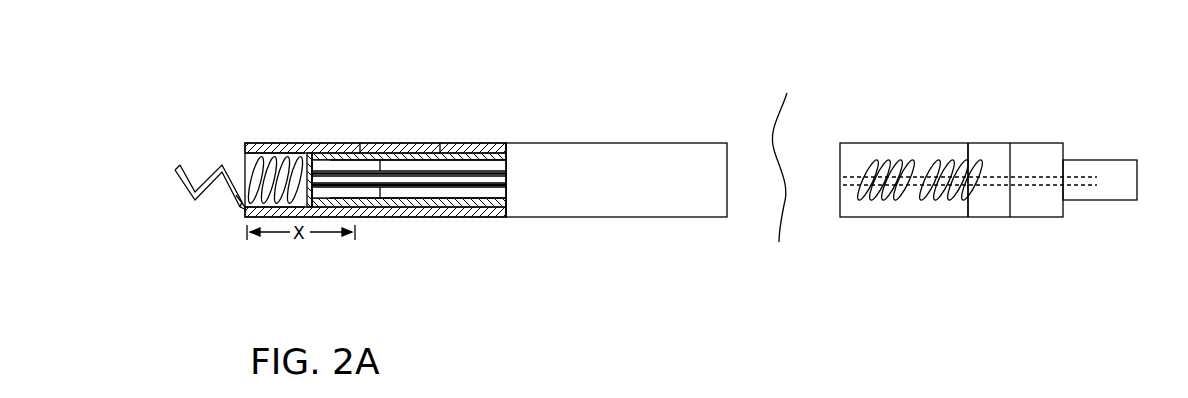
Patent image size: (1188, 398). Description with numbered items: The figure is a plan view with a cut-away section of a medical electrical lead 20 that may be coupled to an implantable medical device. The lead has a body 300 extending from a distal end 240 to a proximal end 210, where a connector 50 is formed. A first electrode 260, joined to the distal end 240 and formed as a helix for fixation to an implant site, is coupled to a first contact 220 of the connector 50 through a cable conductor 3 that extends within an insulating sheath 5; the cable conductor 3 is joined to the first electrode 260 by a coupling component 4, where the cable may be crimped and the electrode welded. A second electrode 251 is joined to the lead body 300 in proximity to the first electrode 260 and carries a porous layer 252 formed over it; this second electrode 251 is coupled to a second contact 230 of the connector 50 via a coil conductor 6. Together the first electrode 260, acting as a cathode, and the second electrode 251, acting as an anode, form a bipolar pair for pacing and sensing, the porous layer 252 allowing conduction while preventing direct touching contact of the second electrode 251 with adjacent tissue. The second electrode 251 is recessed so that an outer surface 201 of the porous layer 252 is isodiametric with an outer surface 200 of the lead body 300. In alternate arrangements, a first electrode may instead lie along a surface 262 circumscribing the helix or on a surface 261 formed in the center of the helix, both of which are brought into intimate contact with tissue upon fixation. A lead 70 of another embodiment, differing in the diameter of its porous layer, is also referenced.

The medical electrical lead 20 is at (598, 106).
The distal end 240 is at (217, 108).
The surface 261 is at (243, 203).
The first electrode 260 is at (200, 206).
The surface 262 is at (247, 213).
The coupling component 4 is at (298, 143).
The insulating sheath 5 is at (318, 143).
The cable conductor 3 is at (348, 143).
The porous layer 252 is at (370, 143).
The second electrode 251 is at (425, 143).
The body 300 is at (630, 190).
The outer surface 201 is at (395, 218).
The coil conductor 6 is at (464, 218).
The outer surface 200 is at (487, 218).
The proximal end 210 is at (865, 125).
The second contact 230 is at (980, 143).
The first contact 220 is at (1070, 160).
The connector 50 is at (1133, 233).
The lead 70 is at (1066, 393).